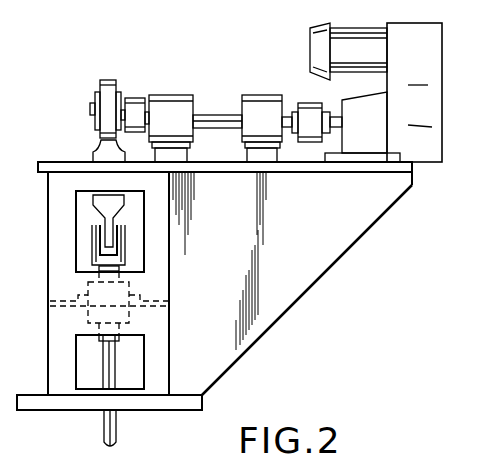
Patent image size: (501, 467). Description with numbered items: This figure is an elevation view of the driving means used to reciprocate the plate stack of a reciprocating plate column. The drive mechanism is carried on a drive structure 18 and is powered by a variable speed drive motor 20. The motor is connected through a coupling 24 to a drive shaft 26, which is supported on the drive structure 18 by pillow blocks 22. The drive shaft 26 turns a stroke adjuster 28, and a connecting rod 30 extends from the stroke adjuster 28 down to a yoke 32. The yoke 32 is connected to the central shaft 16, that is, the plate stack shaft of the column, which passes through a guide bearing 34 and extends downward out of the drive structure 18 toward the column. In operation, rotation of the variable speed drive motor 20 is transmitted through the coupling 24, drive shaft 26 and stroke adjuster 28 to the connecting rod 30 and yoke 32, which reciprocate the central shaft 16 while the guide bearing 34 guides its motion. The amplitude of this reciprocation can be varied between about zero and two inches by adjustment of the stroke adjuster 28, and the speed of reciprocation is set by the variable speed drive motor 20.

The central shaft 16 is at (101, 430).
The drive structure 18 is at (348, 249).
The variable speed drive motor 20 is at (442, 36).
The pillow blocks 22 is at (178, 96).
The coupling 24 is at (310, 104).
The drive shaft 26 is at (213, 113).
The stroke adjuster 28 is at (140, 99).
The connecting rod 30 is at (93, 150).
The yoke 32 is at (93, 240).
The guide bearing 34 is at (88, 310).